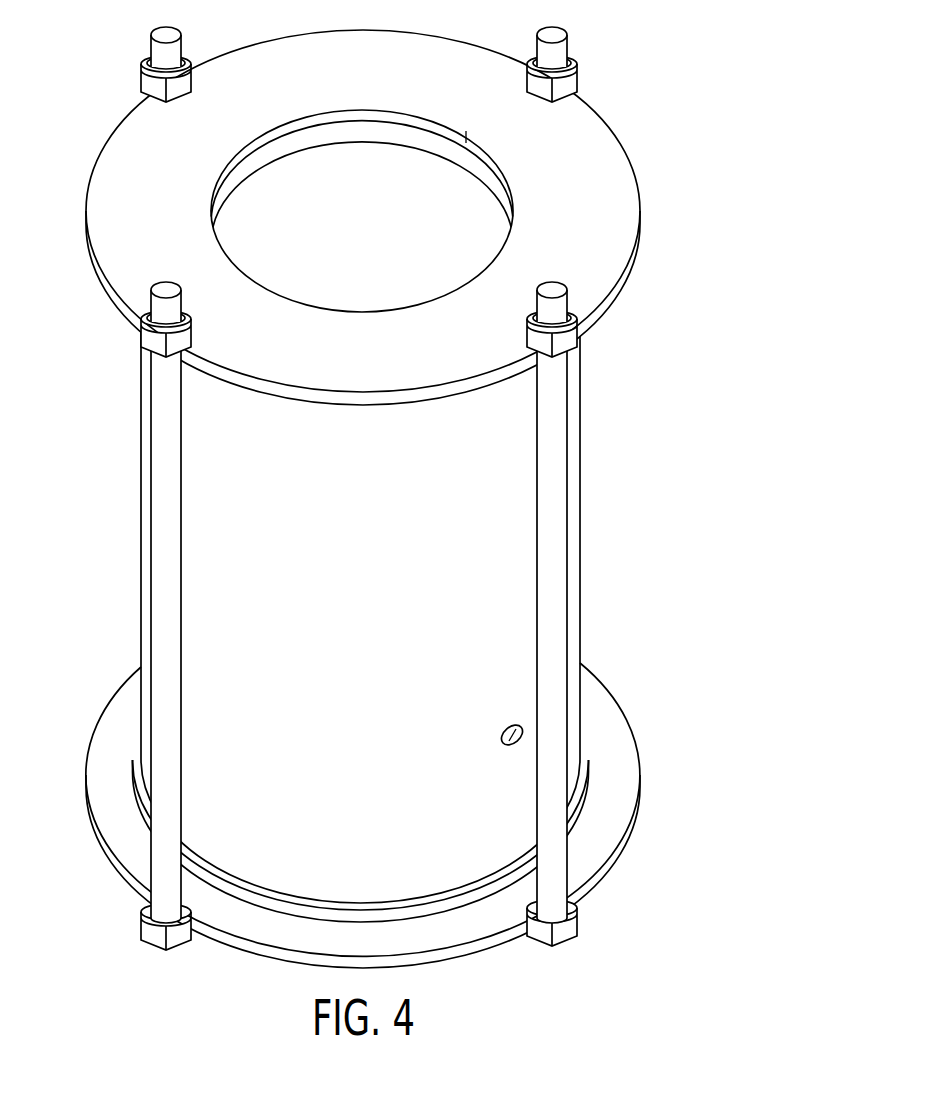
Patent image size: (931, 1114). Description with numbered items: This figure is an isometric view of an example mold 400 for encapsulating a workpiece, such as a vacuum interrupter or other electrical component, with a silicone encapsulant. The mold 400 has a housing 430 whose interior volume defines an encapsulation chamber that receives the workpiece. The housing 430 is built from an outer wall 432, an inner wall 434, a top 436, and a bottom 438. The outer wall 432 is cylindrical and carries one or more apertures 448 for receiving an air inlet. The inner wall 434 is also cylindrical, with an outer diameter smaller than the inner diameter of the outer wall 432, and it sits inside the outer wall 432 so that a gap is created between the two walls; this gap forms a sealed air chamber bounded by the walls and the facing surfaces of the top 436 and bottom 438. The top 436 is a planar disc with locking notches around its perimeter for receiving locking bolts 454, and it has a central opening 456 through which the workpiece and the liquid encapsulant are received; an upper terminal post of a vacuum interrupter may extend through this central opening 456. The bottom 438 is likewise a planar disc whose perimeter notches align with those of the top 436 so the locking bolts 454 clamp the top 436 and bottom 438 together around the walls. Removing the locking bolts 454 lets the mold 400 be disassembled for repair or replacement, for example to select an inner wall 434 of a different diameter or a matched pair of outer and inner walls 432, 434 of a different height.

The mold 400 is at (714, 140).
The housing 430 is at (664, 293).
The outer wall 432 is at (147, 514).
The inner wall 434 is at (227, 245).
The top 436 is at (115, 185).
The bottom 438 is at (108, 765).
The aperture 448 is at (520, 724).
The locking bolts 454 is at (157, 33).
The central opening 456 is at (377, 232).